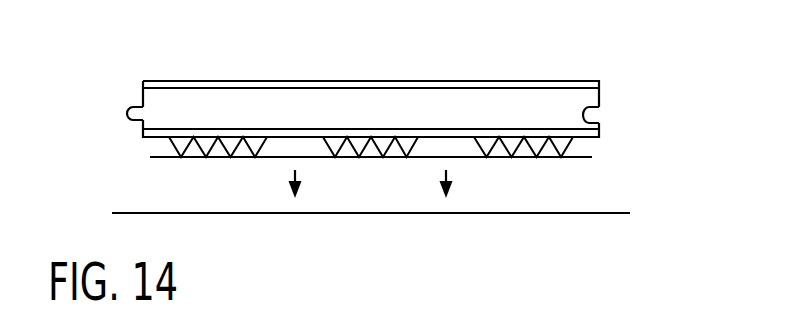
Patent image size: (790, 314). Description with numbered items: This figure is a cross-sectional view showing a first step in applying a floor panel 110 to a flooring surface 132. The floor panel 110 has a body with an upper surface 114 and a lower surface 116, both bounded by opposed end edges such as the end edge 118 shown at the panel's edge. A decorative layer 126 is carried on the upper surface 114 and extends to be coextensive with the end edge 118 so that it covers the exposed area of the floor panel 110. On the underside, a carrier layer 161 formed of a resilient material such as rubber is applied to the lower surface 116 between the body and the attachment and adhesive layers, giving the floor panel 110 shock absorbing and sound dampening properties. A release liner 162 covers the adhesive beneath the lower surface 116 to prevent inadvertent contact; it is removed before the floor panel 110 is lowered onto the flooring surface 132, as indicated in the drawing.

The floor panel 110 is at (135, 53).
The upper surface 114 is at (372, 88).
The end edge 118 is at (128, 90).
The decorative layer 126 is at (297, 78).
The carrier layer 161 is at (568, 132).
The lower surface 116 is at (490, 138).
The release liner 162 is at (578, 158).
The flooring surface 132 is at (370, 213).